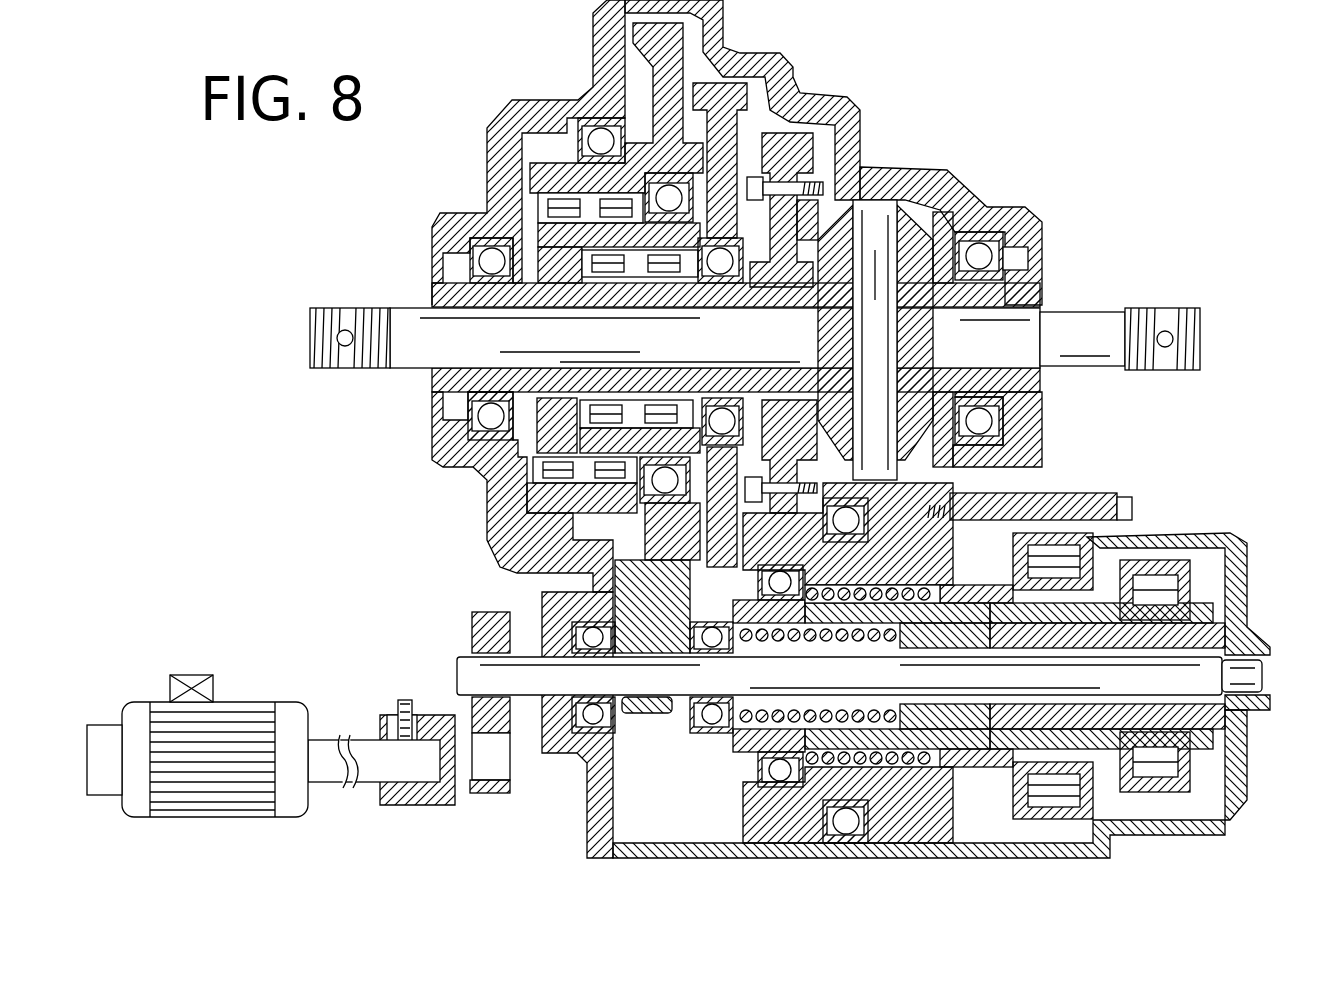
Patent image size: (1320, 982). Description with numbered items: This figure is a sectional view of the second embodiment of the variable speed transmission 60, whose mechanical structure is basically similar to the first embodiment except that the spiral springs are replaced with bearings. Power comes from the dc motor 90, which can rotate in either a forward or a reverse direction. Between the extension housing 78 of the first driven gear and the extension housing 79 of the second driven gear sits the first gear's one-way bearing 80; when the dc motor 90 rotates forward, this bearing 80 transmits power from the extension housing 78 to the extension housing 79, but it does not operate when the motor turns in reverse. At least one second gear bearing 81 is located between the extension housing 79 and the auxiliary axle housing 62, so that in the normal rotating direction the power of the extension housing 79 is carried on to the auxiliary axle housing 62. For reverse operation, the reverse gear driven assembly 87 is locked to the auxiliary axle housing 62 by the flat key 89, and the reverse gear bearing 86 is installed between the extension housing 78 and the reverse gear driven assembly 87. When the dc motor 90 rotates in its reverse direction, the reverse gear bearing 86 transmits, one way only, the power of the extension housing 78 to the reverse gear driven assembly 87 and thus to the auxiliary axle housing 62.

The variable speed transmission 60 is at (1036, 128).
The auxiliary axle housing 62 is at (462, 302).
The extension housing of the first driven gear 78 is at (533, 507).
The extension housing of the second driven gear 79 is at (590, 212).
The first gear's one-way bearing 80 is at (600, 483).
The second gear bearing 81 is at (530, 426).
The reverse gear bearing 86 is at (533, 477).
The reverse gear driven assembly 87 is at (560, 428).
The flat key 89 is at (537, 250).
The dc motor 90 is at (208, 803).